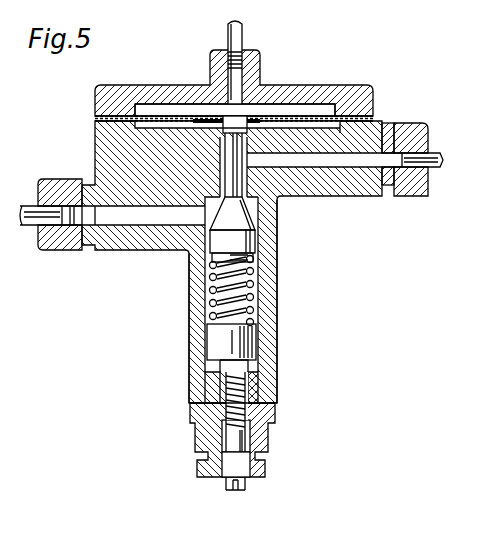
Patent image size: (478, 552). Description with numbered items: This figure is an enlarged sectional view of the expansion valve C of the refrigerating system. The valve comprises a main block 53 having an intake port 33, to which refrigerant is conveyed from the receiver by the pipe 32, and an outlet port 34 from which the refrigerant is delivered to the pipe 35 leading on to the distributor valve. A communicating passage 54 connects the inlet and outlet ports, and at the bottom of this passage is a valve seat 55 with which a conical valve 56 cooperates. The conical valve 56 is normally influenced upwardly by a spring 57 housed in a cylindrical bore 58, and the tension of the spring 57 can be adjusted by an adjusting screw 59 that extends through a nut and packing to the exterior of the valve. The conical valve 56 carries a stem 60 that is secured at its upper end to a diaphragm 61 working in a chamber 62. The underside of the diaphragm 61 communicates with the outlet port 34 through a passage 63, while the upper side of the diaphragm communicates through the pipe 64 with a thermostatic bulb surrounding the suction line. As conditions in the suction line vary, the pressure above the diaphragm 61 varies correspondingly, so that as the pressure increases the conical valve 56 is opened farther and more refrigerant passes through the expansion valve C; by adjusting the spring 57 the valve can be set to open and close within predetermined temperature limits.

The expansion valve C is at (168, 86).
The pipe 32 is at (20, 205).
The intake port 33 is at (107, 220).
The outlet port 34 is at (377, 165).
The pipe 35 is at (443, 165).
The main block 53 is at (302, 193).
The communicating passage 54 is at (279, 205).
The valve seat 55 is at (268, 200).
The conical valve 56 is at (215, 223).
The spring 57 is at (208, 304).
The cylindrical bore 58 is at (254, 302).
The adjusting screw 59 is at (219, 481).
The stem 60 is at (237, 162).
The diaphragm 61 is at (272, 118).
The chamber 62 is at (316, 108).
The passage 63 is at (345, 131).
The pipe 64 is at (243, 33).